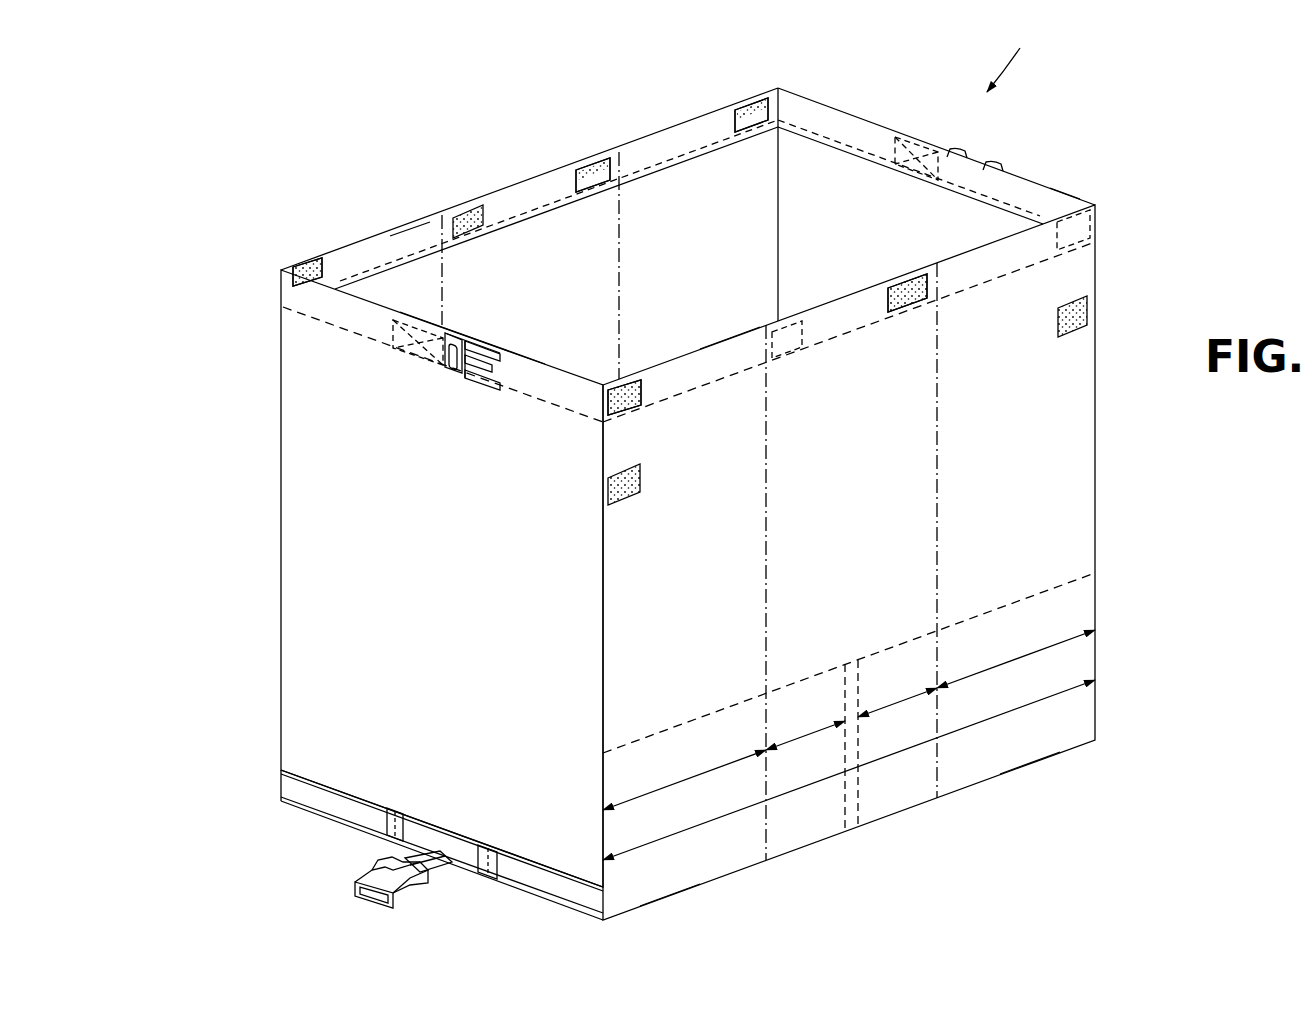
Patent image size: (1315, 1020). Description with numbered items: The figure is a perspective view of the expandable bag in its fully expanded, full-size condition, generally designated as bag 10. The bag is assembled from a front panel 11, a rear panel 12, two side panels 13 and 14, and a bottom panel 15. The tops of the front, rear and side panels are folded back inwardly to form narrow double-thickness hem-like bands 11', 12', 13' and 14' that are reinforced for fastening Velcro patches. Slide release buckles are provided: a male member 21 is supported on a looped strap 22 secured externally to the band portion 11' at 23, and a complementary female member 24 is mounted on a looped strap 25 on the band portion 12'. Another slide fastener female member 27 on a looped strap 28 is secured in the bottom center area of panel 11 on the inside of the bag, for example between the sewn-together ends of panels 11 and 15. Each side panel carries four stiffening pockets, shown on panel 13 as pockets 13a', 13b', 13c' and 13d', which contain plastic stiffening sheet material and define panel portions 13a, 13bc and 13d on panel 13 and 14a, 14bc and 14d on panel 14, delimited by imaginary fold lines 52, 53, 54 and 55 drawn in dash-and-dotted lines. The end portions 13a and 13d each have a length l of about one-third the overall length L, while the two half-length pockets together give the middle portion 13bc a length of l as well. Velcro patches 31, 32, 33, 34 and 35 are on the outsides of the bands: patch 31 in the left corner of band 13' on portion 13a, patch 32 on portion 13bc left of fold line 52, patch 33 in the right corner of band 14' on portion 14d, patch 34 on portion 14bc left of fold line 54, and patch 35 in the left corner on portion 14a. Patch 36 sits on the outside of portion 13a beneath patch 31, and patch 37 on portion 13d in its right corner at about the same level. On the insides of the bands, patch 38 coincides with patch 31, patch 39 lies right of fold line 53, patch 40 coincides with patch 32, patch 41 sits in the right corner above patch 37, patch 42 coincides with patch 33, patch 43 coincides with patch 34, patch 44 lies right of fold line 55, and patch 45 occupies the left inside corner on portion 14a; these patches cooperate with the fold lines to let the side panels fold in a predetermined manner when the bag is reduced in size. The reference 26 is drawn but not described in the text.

The full-size bag 10 is at (1022, 57).
The front panel 11 is at (412, 578).
The reinforced band portion of front panel 11' is at (494, 340).
The rear panel 12 is at (936, 143).
The reinforced band portion of rear panel 12' is at (1097, 174).
The side panel 13 is at (888, 562).
The band portion of side panel 13 13' is at (730, 326).
The side panel portion 13a is at (691, 591).
The side panel portion 13bc is at (880, 554).
The side panel portion 13d is at (1018, 496).
The stiffening pocket 13a' is at (715, 885).
The stiffening pocket 13b' is at (823, 780).
The stiffening pocket 13c' is at (901, 763).
The stiffening pocket 13d' is at (1039, 779).
The side panel 14 is at (529, 192).
The band portion of side panel 14 14' is at (393, 200).
The side panel portion 14a is at (425, 304).
The side panel portion 14bc is at (580, 307).
The side panel portion 14d is at (715, 241).
The bottom panel 15 is at (635, 882).
The male member of slide release buckle 21 is at (490, 386).
The looped strap 22 is at (455, 362).
The securing point of strap 22 23 is at (405, 345).
The female member of slide release buckle 24 is at (995, 163).
The looped strap 25 is at (957, 148).
The hidden connector flap 26 is at (923, 137).
The slide fastener female member 27 is at (370, 875).
The looped strap 28 is at (443, 868).
The Velcro patch 31 is at (607, 410).
The Velcro patch 32 is at (912, 303).
The Velcro patch 33 is at (733, 118).
The Velcro patch 34 is at (570, 168).
The Velcro patch 35 is at (297, 265).
The Velcro patch 36 is at (640, 478).
The Velcro patch 37 is at (1060, 323).
The Velcro patch 38 is at (617, 376).
The Velcro patch 39 is at (810, 320).
The Velcro patch 40 is at (887, 285).
The Velcro patch 41 is at (1092, 228).
The Velcro patch 42 is at (753, 121).
The Velcro patch 43 is at (590, 190).
The Velcro patch 44 is at (470, 228).
The Velcro patch 45 is at (325, 270).
The imaginary fold line 52 is at (940, 462).
The imaginary fold line 53 is at (775, 520).
The imaginary fold line 54 is at (620, 250).
The imaginary fold line 55 is at (445, 270).
The overall length L is at (827, 780).
The panel portion length l is at (700, 775).